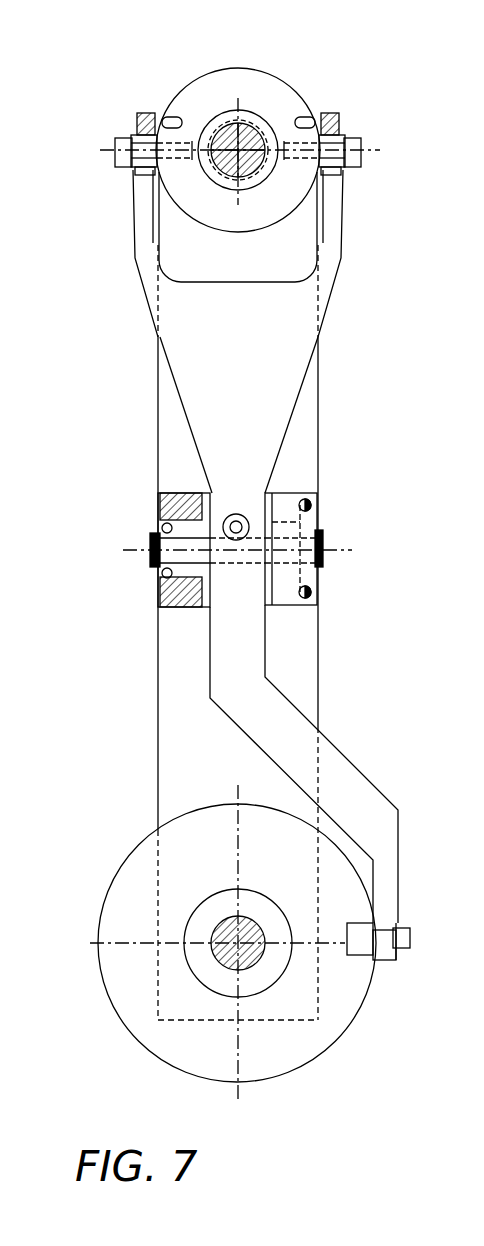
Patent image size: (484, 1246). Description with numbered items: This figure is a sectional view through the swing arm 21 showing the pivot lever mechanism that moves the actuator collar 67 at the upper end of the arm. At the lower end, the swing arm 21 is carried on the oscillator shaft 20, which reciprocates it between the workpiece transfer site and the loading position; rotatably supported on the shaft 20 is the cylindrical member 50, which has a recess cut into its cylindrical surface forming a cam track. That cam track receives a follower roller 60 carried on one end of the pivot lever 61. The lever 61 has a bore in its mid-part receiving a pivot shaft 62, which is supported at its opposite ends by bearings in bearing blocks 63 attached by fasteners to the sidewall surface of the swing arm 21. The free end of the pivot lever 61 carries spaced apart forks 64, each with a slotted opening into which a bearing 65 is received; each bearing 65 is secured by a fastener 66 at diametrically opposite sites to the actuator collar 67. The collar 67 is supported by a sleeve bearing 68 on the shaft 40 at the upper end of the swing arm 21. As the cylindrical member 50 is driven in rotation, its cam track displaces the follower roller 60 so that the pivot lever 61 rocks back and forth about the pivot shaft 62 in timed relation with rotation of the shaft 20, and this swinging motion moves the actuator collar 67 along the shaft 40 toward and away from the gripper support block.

The oscillator shaft 20 is at (212, 950).
The swing arm 21 is at (318, 697).
The shaft 40 is at (260, 130).
The cylindrical member 50 is at (345, 1028).
The follower roller 60 is at (367, 957).
The pivot lever 61 is at (265, 635).
The pivot shaft 62 is at (153, 537).
The bearing blocks 63 is at (283, 492).
The forks 64 is at (147, 114).
The bearing 65 is at (135, 130).
The fastener 66 is at (115, 153).
The actuator collar 67 is at (230, 68).
The sleeve bearing 68 is at (258, 178).